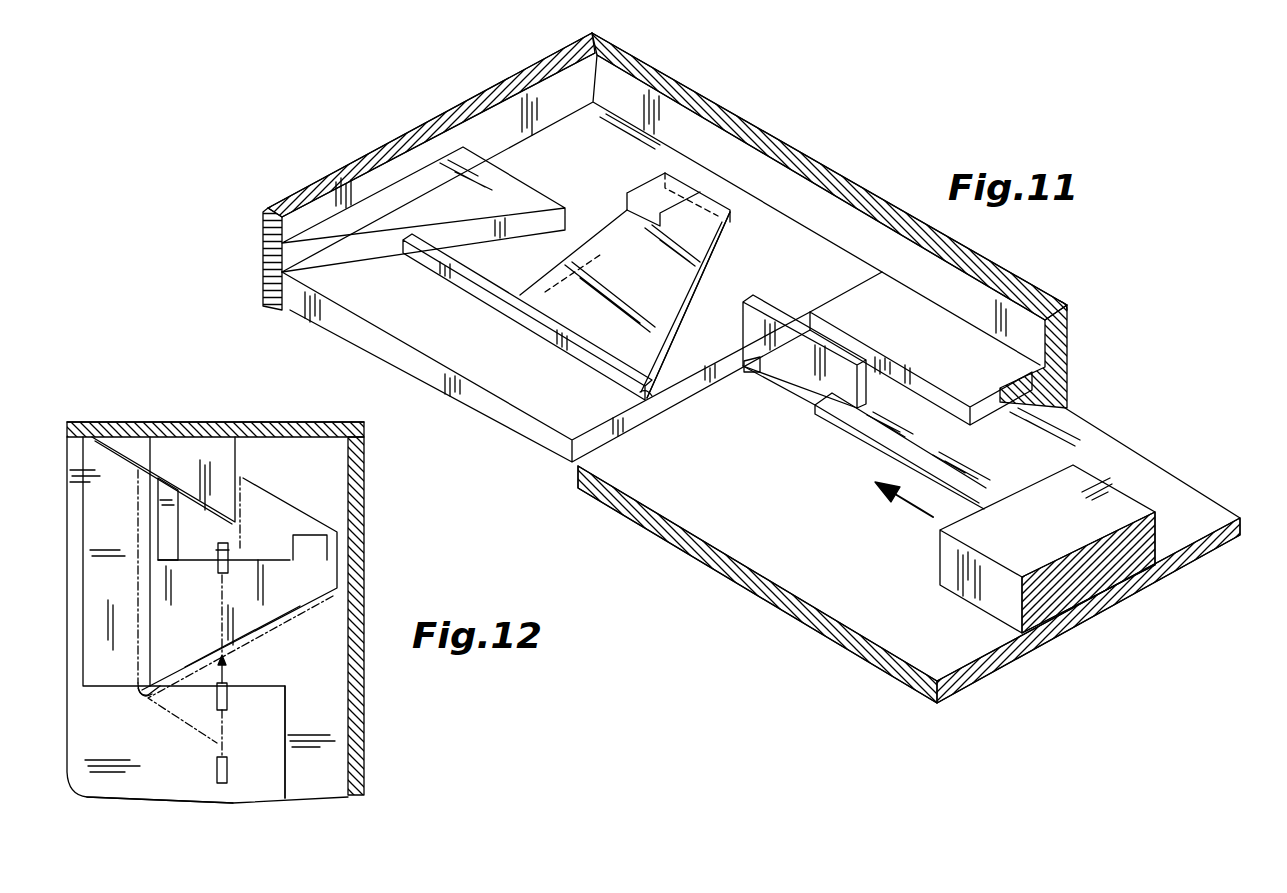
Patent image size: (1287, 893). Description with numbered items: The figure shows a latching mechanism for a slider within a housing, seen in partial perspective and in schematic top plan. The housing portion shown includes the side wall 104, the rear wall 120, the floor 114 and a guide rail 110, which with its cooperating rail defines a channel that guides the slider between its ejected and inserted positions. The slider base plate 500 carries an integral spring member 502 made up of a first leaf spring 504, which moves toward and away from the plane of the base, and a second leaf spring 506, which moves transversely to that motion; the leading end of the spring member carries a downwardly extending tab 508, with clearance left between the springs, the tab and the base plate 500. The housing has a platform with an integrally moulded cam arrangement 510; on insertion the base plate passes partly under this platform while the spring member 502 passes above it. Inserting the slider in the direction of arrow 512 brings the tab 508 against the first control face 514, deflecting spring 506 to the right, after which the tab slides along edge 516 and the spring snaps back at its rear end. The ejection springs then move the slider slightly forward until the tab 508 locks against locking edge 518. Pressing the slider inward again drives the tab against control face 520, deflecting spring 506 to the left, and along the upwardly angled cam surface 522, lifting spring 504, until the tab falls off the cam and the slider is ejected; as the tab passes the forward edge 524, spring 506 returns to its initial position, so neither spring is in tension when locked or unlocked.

In FIG. 11, the side wall 104 is at (829, 181).
In FIG. 12, the side wall 104 is at (356, 717).
In FIG. 11, the guide rail 110 is at (956, 362).
In FIG. 12, the guide rail 110 is at (332, 727).
In FIG. 12, the floor 114 is at (168, 780).
In FIG. 11, the rear wall 120 is at (490, 93).
In FIG. 12, the rear wall 120 is at (228, 422).
In FIG. 11, the slider base plate 500 is at (1058, 538).
In FIG. 11, the spring member 502 is at (784, 438).
In FIG. 11, the first leaf spring 504 is at (900, 441).
In FIG. 11, the second leaf spring 506 is at (788, 320).
In FIG. 12, the second leaf spring 506 is at (227, 572).
In FIG. 11, the tab 508 is at (748, 373).
In FIG. 12, the tab 508 is at (218, 550).
In FIG. 11, the cam arrangement 510 is at (522, 346).
In FIG. 12, the cam arrangement 510 is at (327, 495).
In FIG. 11, the insertion direction arrow 512 is at (933, 517).
In FIG. 12, the insertion direction arrow 512 is at (227, 672).
In FIG. 11, the first control face 514 is at (697, 294).
In FIG. 12, the first control face 514 is at (186, 670).
In FIG. 11, the edge of control cam 516 is at (696, 200).
In FIG. 12, the edge of control cam 516 is at (333, 562).
In FIG. 11, the locking edge 518 is at (604, 253).
In FIG. 12, the locking edge 518 is at (291, 613).
In FIG. 11, the control face 520 is at (540, 222).
In FIG. 12, the control face 520 is at (226, 520).
In FIG. 11, the upwardly angled cam surface 522 is at (493, 268).
In FIG. 12, the upwardly angled cam surface 522 is at (170, 523).
In FIG. 11, the forward edge of control cam 524 is at (640, 389).
In FIG. 12, the forward edge of control cam 524 is at (140, 693).